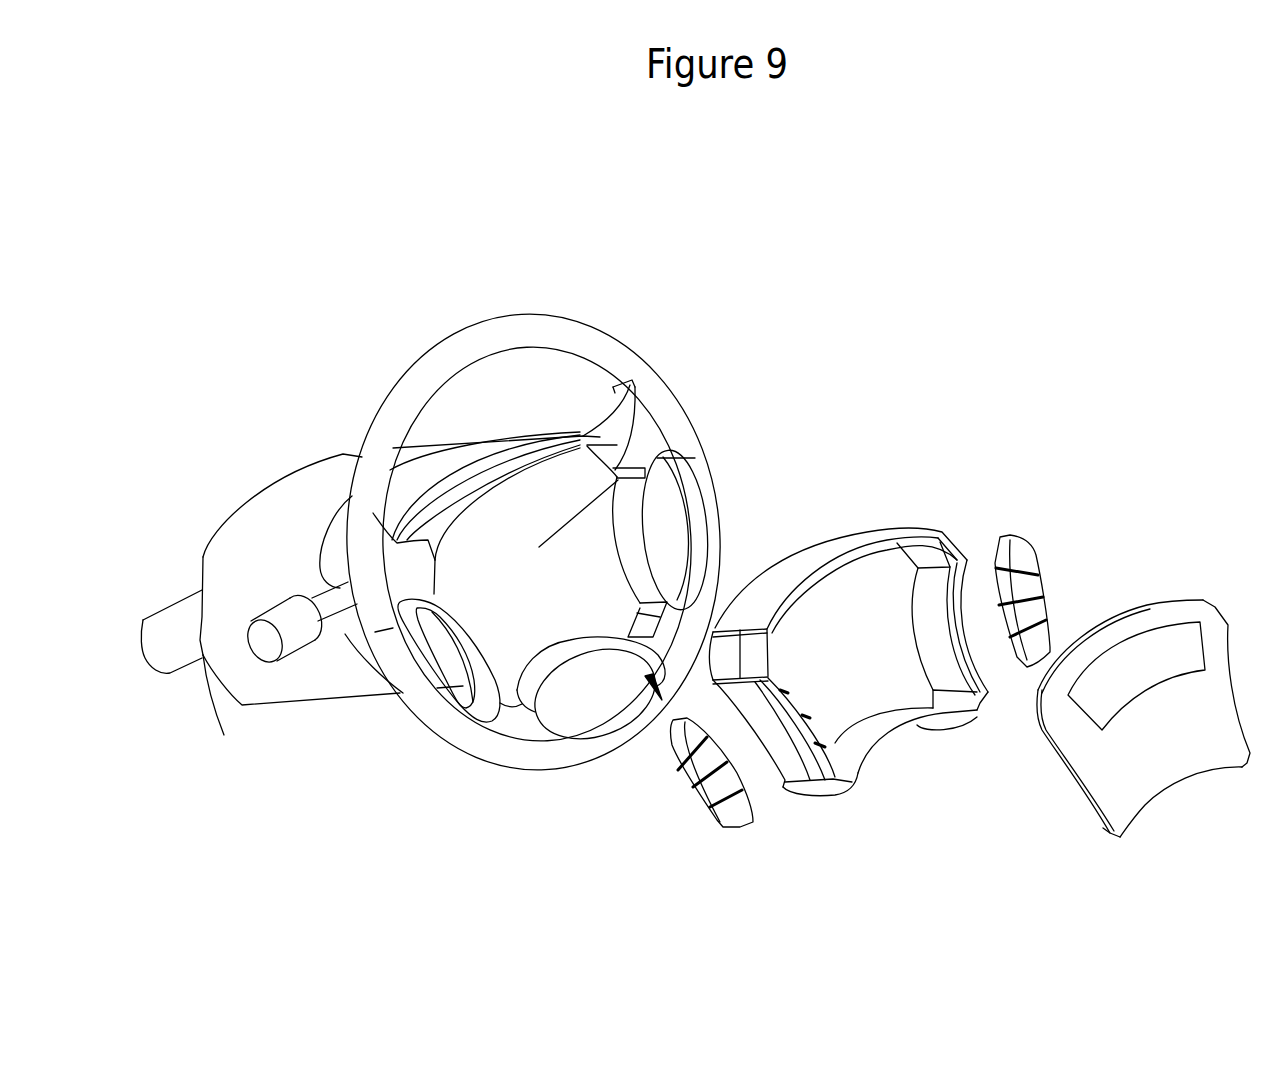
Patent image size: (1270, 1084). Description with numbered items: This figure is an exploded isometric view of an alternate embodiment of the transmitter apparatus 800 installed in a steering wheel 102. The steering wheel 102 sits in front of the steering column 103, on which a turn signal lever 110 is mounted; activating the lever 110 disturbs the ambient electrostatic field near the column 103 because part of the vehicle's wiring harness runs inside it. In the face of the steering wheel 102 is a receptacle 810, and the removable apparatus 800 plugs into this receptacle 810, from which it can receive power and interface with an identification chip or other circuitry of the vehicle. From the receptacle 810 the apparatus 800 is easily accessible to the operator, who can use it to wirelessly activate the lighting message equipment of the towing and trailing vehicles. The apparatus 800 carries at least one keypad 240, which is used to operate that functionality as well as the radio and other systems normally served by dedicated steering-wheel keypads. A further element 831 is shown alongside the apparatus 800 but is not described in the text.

The steering wheel 102 is at (518, 728).
The steering column 103 is at (316, 502).
The turn signal lever 110 is at (265, 640).
The receptacle 810 is at (628, 382).
The apparatus 800 is at (893, 513).
The keypad 240 is at (1022, 588).
The cover panel segment 831 is at (1150, 737).